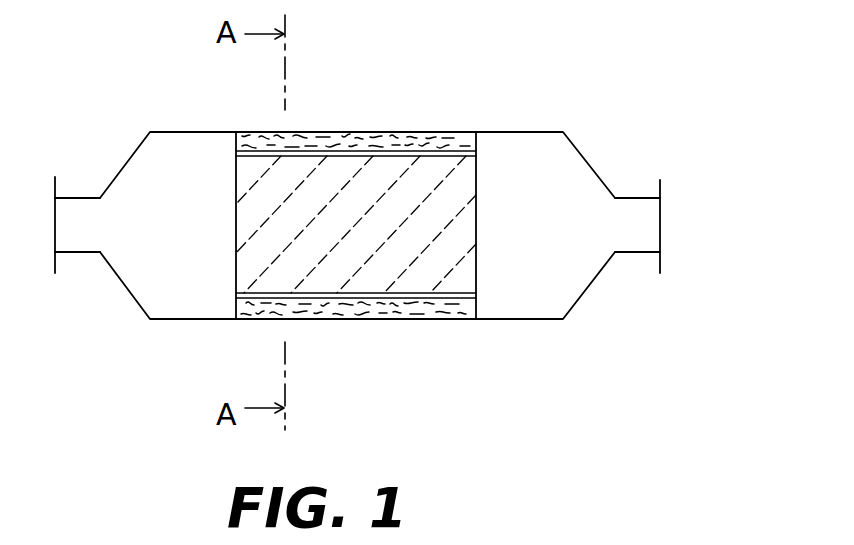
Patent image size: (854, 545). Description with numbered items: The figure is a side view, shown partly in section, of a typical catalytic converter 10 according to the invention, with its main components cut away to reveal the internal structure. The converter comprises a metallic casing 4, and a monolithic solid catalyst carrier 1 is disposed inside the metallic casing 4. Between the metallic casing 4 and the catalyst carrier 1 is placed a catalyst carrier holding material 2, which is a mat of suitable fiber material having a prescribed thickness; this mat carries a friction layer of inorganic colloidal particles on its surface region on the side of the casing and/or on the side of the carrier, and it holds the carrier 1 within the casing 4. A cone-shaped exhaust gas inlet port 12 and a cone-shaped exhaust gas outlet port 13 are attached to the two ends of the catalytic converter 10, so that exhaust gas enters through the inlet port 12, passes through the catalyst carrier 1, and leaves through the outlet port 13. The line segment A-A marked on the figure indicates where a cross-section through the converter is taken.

The catalytic converter 10 is at (626, 164).
The metallic casing 4 is at (514, 319).
The exhaust gas inlet port 12 is at (78, 240).
The exhaust gas outlet port 13 is at (638, 237).
The monolithic solid catalyst carrier 1 is at (251, 260).
The catalyst carrier holding material 2 is at (363, 132).